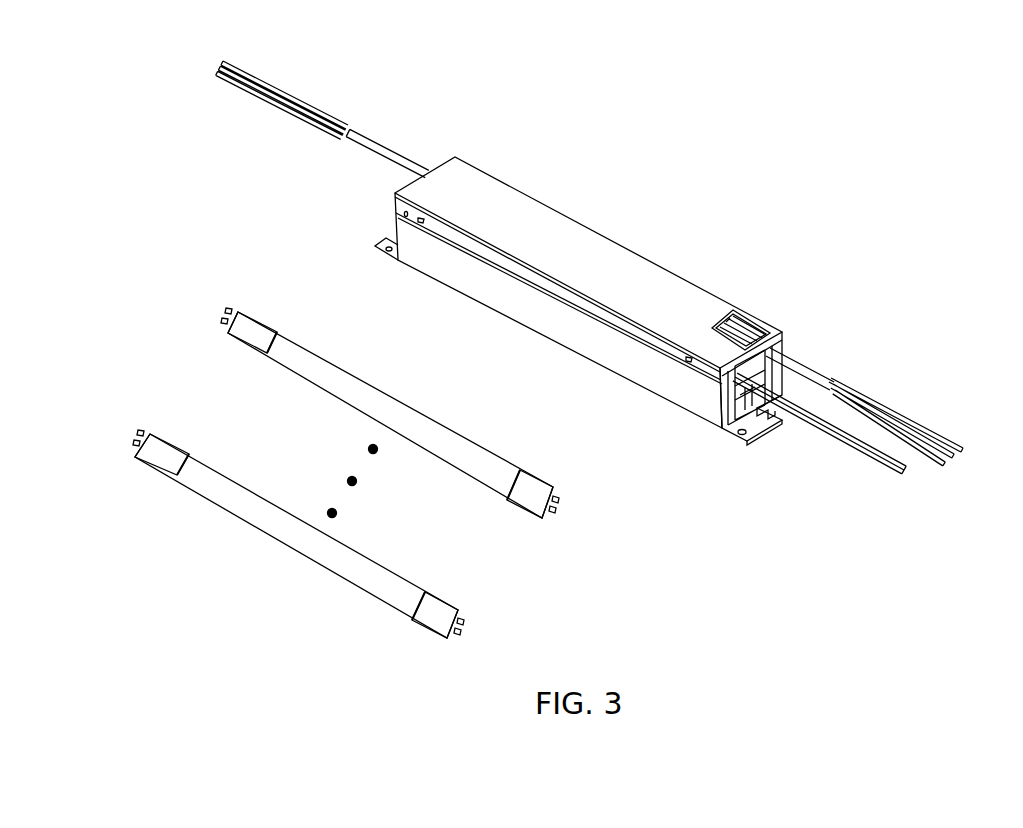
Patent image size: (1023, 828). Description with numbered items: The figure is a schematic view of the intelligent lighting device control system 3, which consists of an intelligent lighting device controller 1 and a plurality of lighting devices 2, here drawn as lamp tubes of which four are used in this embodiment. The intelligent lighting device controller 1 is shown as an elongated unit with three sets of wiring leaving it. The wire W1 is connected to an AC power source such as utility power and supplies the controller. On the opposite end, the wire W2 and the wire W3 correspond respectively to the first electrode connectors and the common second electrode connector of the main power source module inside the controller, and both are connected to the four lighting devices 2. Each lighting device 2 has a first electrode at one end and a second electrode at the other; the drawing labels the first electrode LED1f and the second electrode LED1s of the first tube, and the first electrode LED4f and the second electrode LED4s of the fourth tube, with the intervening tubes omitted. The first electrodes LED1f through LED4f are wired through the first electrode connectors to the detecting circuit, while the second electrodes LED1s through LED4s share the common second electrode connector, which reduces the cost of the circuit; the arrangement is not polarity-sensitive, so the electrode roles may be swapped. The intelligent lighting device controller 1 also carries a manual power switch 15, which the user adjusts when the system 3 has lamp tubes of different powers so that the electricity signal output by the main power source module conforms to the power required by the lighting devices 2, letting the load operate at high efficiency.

The intelligent lighting device control system 3 is at (541, 95).
The intelligent lighting device controller 1 is at (637, 277).
The manual power switch 15 is at (735, 322).
The wire W1 is at (373, 142).
The wire W2 is at (880, 403).
The wire W3 is at (832, 437).
The lighting device 2 is at (483, 462).
The first electrode of the first lighting device LED1f is at (250, 335).
The second electrode of the first lighting device LED1s is at (533, 488).
The first electrode of the fourth lighting device LED4f is at (150, 462).
The second electrode of the fourth lighting device LED4s is at (443, 613).